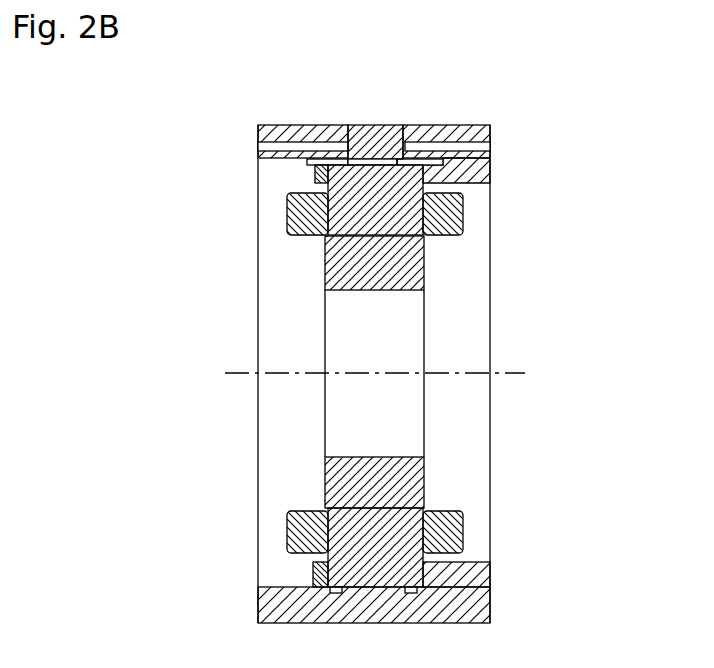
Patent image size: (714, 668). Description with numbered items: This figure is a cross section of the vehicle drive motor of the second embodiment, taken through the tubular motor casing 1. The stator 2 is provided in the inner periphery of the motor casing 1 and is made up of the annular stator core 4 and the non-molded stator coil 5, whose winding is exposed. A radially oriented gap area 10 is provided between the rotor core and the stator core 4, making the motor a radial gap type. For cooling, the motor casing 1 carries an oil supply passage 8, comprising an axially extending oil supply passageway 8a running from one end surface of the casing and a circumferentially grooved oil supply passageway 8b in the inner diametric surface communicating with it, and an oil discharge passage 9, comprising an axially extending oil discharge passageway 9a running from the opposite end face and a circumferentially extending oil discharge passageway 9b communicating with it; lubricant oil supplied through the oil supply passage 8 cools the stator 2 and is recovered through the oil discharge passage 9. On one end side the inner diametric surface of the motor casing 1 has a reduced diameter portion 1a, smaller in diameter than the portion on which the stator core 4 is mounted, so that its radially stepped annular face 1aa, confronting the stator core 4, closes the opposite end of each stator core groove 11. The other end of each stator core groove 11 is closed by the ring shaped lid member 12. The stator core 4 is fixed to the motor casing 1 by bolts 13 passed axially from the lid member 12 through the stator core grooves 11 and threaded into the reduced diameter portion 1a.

The motor casing 1 is at (417, 342).
The reduced diameter portion 1a is at (483, 178).
The radially stepped annular face 1aa is at (396, 168).
The stator 2 is at (441, 373).
The stator core 4 is at (442, 237).
The stator coil 5 is at (465, 217).
The oil supply passage 8 is at (242, 150).
The axially extending oil supply passageway 8a is at (268, 146).
The circumferentially grooved oil supply passageway 8b is at (308, 162).
The oil discharge passage 9 is at (510, 137).
The axially extending oil discharge passageway 9a is at (478, 145).
The circumferentially extending oil discharge passageway 9b is at (450, 160).
The gap area 10 is at (343, 252).
The stator core grooves 11 is at (376, 160).
The ring shaped lid member 12 is at (312, 178).
The bolts 13 is at (327, 236).